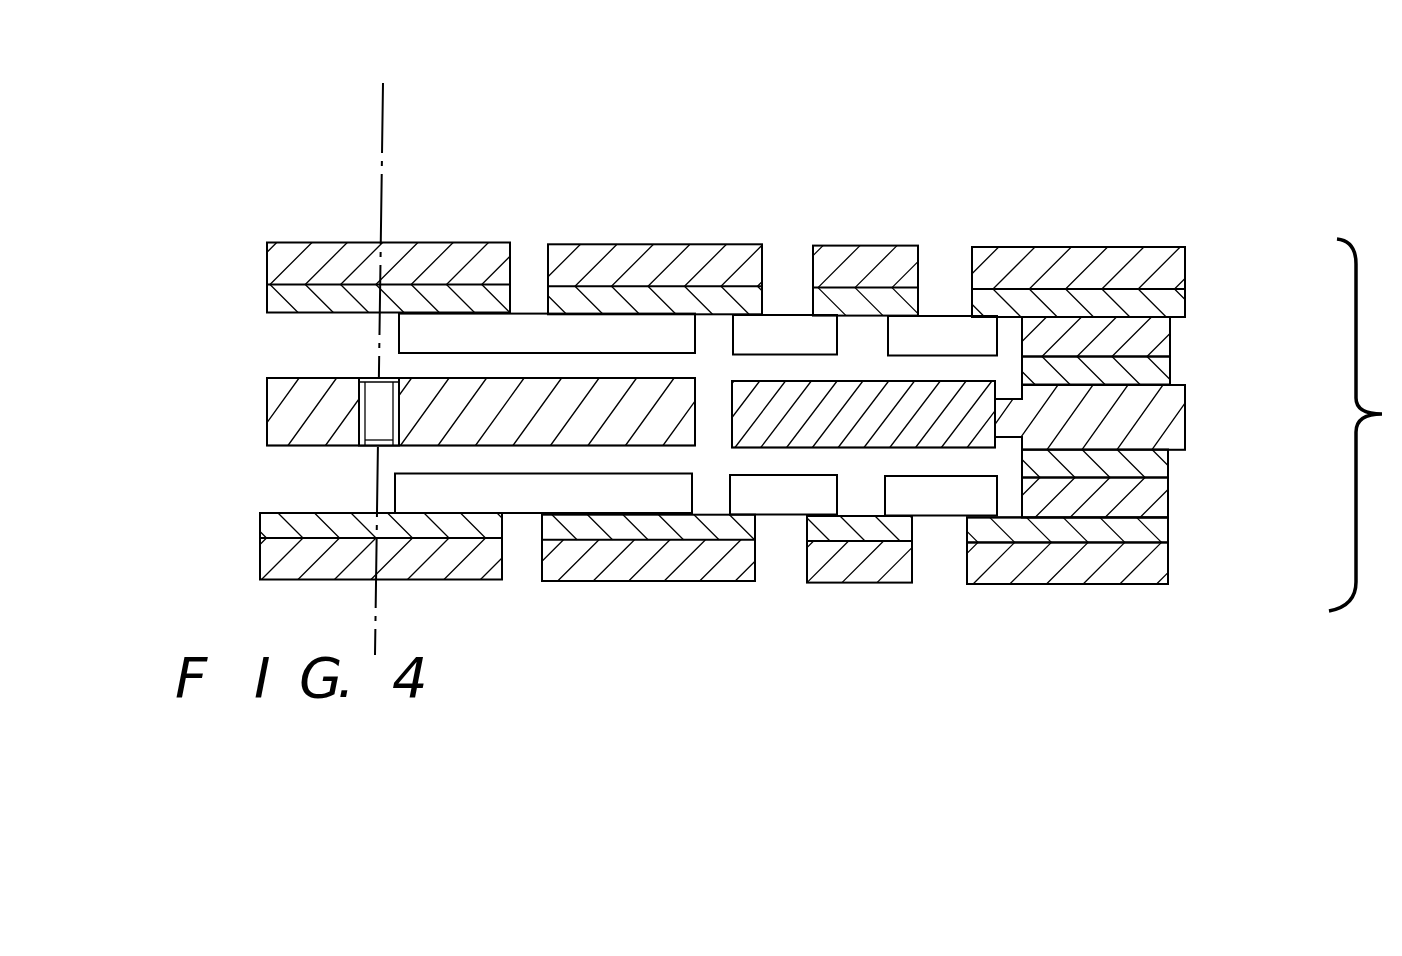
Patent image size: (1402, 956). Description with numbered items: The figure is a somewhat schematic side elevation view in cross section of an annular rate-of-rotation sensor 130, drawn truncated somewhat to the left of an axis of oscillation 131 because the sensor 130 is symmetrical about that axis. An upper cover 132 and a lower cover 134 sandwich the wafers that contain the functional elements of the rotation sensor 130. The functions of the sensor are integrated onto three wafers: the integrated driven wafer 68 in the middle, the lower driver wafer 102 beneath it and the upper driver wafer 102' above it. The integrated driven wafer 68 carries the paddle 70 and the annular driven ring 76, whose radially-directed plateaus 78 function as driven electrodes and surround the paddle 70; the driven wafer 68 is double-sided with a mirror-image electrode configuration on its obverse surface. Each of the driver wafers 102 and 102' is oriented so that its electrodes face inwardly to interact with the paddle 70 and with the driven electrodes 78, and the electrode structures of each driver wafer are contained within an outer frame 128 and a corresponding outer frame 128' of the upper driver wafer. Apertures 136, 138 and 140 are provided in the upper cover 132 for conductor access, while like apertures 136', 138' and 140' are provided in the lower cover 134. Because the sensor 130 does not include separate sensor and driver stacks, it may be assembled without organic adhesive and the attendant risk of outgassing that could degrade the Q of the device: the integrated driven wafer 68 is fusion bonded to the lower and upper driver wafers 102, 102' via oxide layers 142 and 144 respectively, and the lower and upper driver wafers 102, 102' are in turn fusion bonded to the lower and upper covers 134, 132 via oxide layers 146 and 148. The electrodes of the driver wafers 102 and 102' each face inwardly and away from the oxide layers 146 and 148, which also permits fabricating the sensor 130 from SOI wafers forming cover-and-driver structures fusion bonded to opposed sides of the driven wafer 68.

The axis of oscillation 131 is at (377, 155).
The upper cover 132 is at (265, 258).
The lower cover 134 is at (258, 556).
The aperture 136 is at (511, 252).
The aperture 138 is at (821, 230).
The aperture 140 is at (967, 243).
The aperture 136' is at (502, 584).
The aperture 138' is at (776, 590).
The aperture 140' is at (936, 588).
The integrated driven wafer 68 is at (265, 407).
The paddle 70 is at (634, 379).
The annular driven ring 76 is at (792, 397).
The radially-directed plateaus 78 is at (842, 390).
The lower driver wafer 102 is at (547, 488).
The upper driver wafer 102' is at (554, 333).
The outer frame 128 is at (1151, 497).
The outer frame 128' is at (1159, 334).
The oxide layer 142 is at (1170, 463).
The oxide layer 144 is at (1172, 370).
The oxide layer 146 is at (1170, 530).
The oxide layer 148 is at (1187, 296).
The annular rate-of-rotation sensor 130 is at (1365, 425).